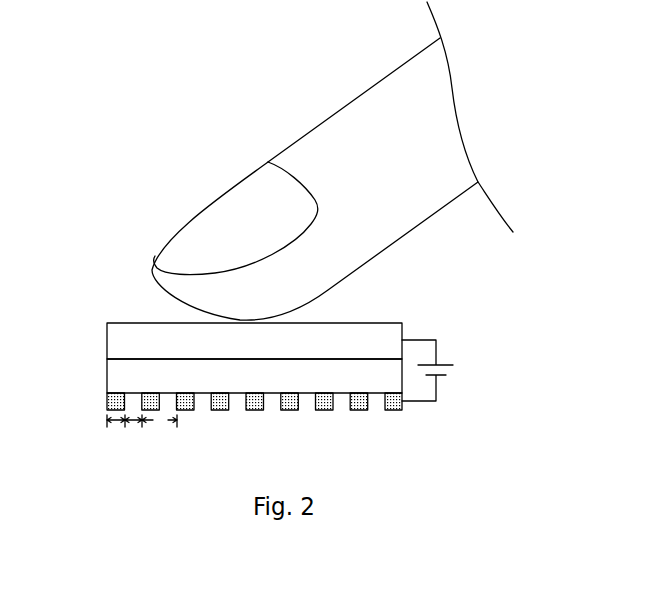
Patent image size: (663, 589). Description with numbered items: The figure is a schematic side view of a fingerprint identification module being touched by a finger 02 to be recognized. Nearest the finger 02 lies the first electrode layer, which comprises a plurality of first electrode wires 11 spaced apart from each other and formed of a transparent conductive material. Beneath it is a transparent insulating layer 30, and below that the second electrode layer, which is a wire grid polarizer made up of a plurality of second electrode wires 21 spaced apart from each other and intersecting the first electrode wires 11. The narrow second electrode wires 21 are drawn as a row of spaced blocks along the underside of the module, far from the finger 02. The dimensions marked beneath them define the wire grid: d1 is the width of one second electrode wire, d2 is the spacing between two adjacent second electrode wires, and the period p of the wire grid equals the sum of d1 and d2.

The finger 02 is at (395, 212).
The first electrode wires 11 is at (116, 339).
The transparent insulating layer 30 is at (116, 372).
The second electrode wires 21 is at (116, 398).
The width of the second electrode wires d1 is at (113, 423).
The spacing of two adjacent second electrode wires d2 is at (133, 423).
The period of the wire grid p is at (159, 418).